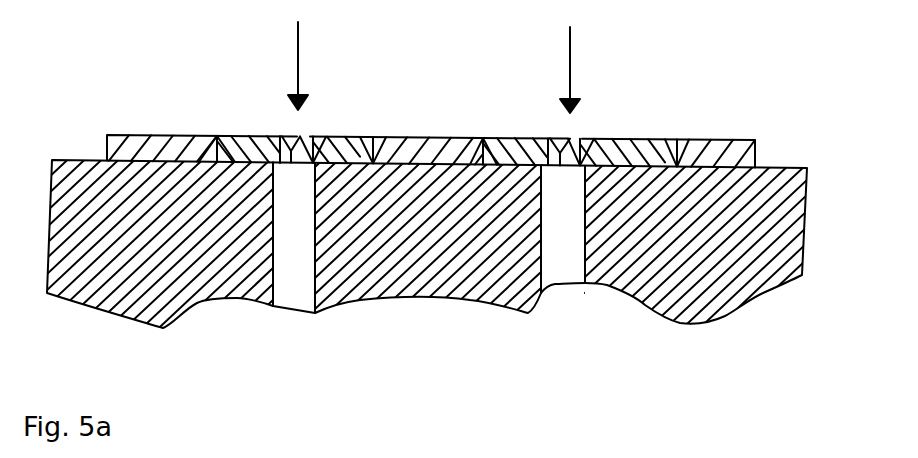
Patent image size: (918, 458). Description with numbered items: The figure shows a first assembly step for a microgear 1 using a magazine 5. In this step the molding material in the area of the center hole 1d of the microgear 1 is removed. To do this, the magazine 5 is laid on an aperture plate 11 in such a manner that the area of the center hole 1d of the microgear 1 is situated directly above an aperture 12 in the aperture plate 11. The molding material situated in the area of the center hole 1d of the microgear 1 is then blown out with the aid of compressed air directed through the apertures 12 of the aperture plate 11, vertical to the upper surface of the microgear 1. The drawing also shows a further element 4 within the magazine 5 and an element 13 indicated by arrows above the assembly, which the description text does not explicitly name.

The microgear 1 is at (233, 133).
The center hole 1d is at (303, 132).
The filler material 4 is at (710, 153).
The magazine 5 is at (485, 125).
The aperture plate 11 is at (740, 283).
The aperture 12 is at (292, 295).
The irradiation / light beam 13 is at (290, 63).